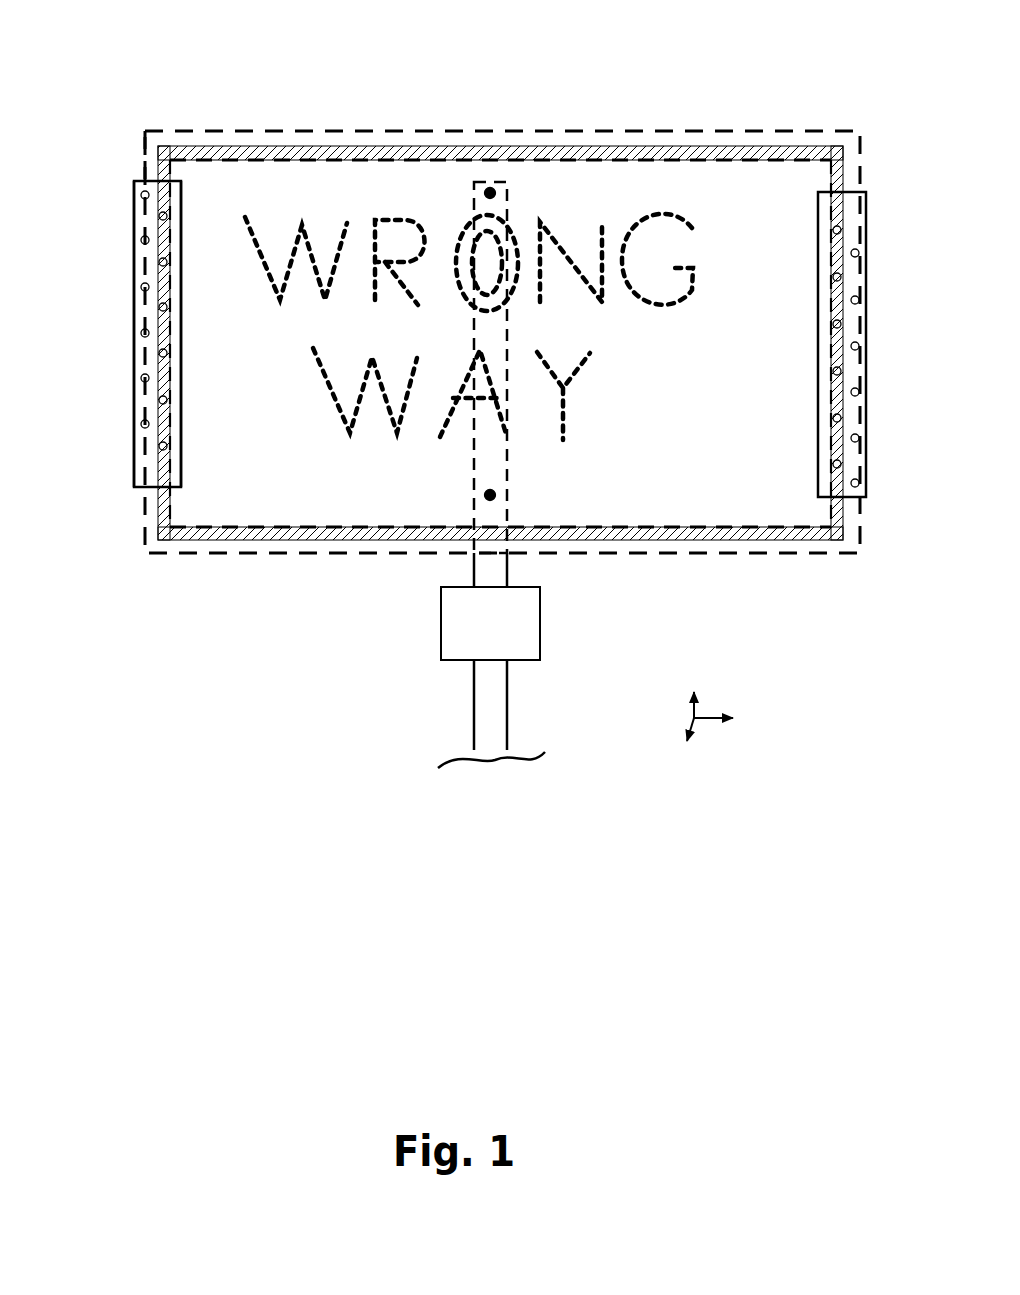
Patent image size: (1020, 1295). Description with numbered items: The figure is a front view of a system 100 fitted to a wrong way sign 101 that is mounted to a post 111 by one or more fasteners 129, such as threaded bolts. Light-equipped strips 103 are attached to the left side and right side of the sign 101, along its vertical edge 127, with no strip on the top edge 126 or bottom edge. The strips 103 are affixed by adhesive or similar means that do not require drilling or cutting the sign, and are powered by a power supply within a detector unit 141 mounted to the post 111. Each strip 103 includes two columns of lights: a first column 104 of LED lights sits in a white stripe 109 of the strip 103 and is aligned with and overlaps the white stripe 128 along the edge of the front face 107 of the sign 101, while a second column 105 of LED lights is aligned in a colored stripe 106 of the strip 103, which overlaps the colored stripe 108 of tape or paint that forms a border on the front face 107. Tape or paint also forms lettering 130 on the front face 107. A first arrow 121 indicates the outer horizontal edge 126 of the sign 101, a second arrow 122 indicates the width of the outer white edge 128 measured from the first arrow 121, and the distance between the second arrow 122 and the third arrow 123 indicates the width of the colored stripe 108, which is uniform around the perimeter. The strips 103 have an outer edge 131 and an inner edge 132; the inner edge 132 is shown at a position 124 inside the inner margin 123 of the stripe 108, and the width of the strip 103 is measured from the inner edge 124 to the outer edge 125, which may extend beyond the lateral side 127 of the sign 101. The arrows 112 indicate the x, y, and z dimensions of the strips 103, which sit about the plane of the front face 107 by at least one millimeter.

The system 100 is at (573, 72).
The wrong way sign 101 is at (801, 199).
The light-equipped strips 103 is at (456, 339).
The first column of LED lights 104 is at (142, 424).
The second column of LED lights 105 is at (165, 447).
The colored stripe of the strip 106 is at (834, 346).
The front face 107 is at (452, 178).
The colored stripe 108 is at (428, 157).
The white stripe 109 is at (853, 222).
The post 111 is at (495, 722).
The arrows 112 is at (715, 718).
The first arrow 121 is at (145, 129).
The second arrow 122 is at (153, 129).
The third arrow 123 is at (170, 129).
The inner edge of light strip 124 is at (818, 190).
The outer edge of light strip 125 is at (866, 190).
The outer horizontal edge 126 is at (243, 129).
The vertical edge 127 is at (144, 517).
The white stripe 128 is at (742, 141).
The fasteners 129 is at (497, 494).
The lettering 130 is at (567, 418).
The outer edge of strip 131 is at (131, 206).
The inner edge of strip 132 is at (188, 206).
The detector unit 141 is at (531, 647).